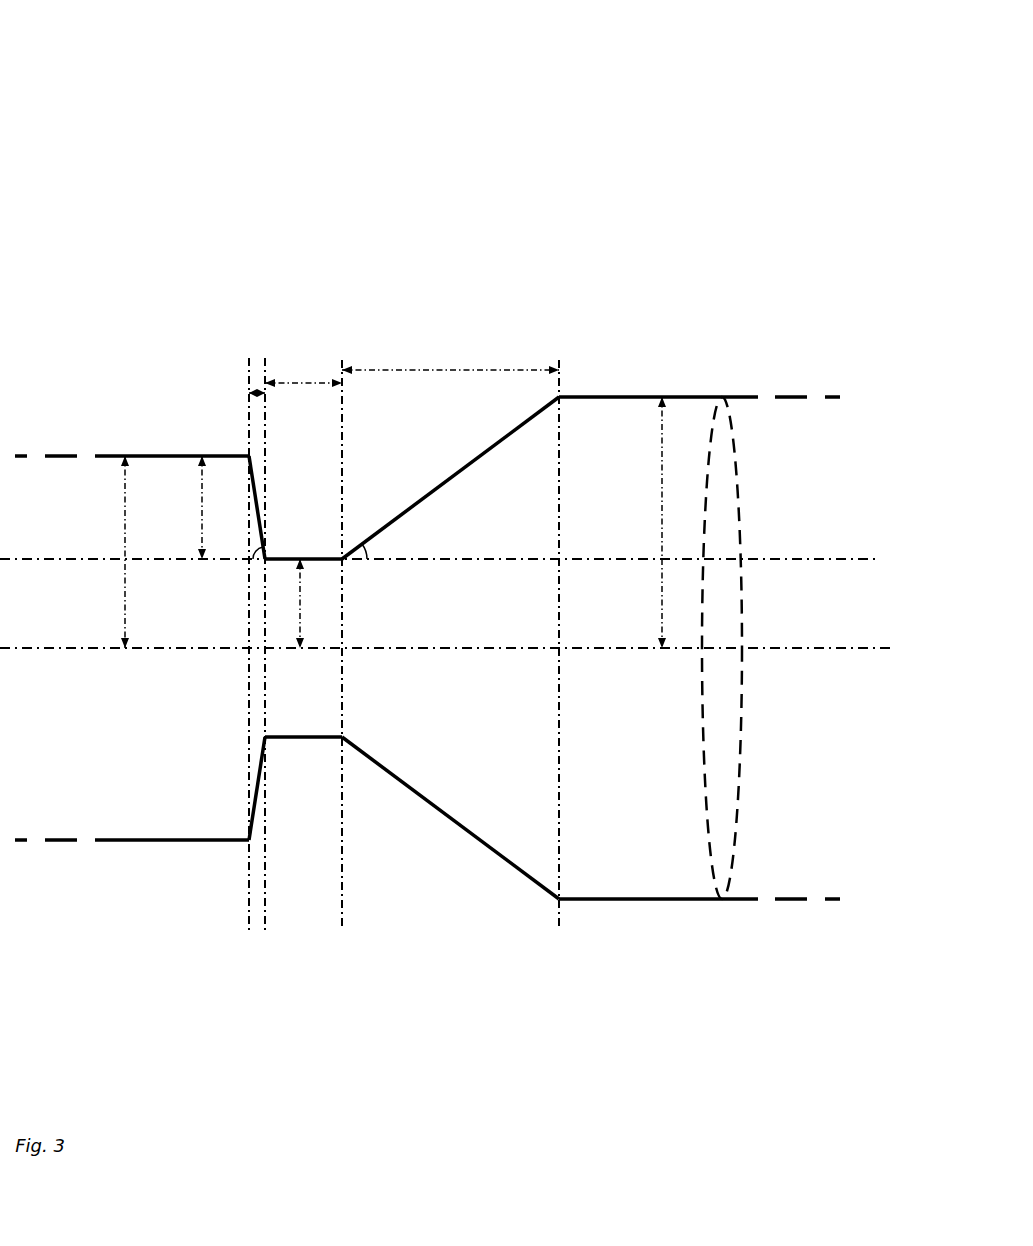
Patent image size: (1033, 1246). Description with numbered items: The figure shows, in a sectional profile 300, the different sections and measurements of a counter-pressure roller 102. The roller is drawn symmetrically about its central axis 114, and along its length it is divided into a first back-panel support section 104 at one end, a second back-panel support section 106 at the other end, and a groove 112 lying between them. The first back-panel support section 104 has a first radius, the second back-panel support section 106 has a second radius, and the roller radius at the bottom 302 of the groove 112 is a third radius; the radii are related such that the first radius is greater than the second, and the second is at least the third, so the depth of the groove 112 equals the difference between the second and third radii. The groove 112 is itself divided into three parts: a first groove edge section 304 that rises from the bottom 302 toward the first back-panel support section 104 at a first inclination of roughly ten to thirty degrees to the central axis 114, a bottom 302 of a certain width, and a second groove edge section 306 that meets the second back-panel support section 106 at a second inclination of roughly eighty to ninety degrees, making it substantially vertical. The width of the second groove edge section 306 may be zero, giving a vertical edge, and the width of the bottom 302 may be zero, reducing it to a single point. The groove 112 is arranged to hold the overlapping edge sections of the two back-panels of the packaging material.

The nozzle profile / flow channel geometry 300 is at (92, 156).
The counter-pressure roller 102 is at (702, 398).
The first back-panel support section 104 is at (699, 693).
The second back-panel support section 106 is at (833, 1032).
The groove 112 is at (399, 739).
The central axis 114 is at (785, 648).
The bottom of the groove 302 is at (342, 943).
The first groove edge section 304 is at (342, 943).
The second groove edge section 306 is at (265, 943).